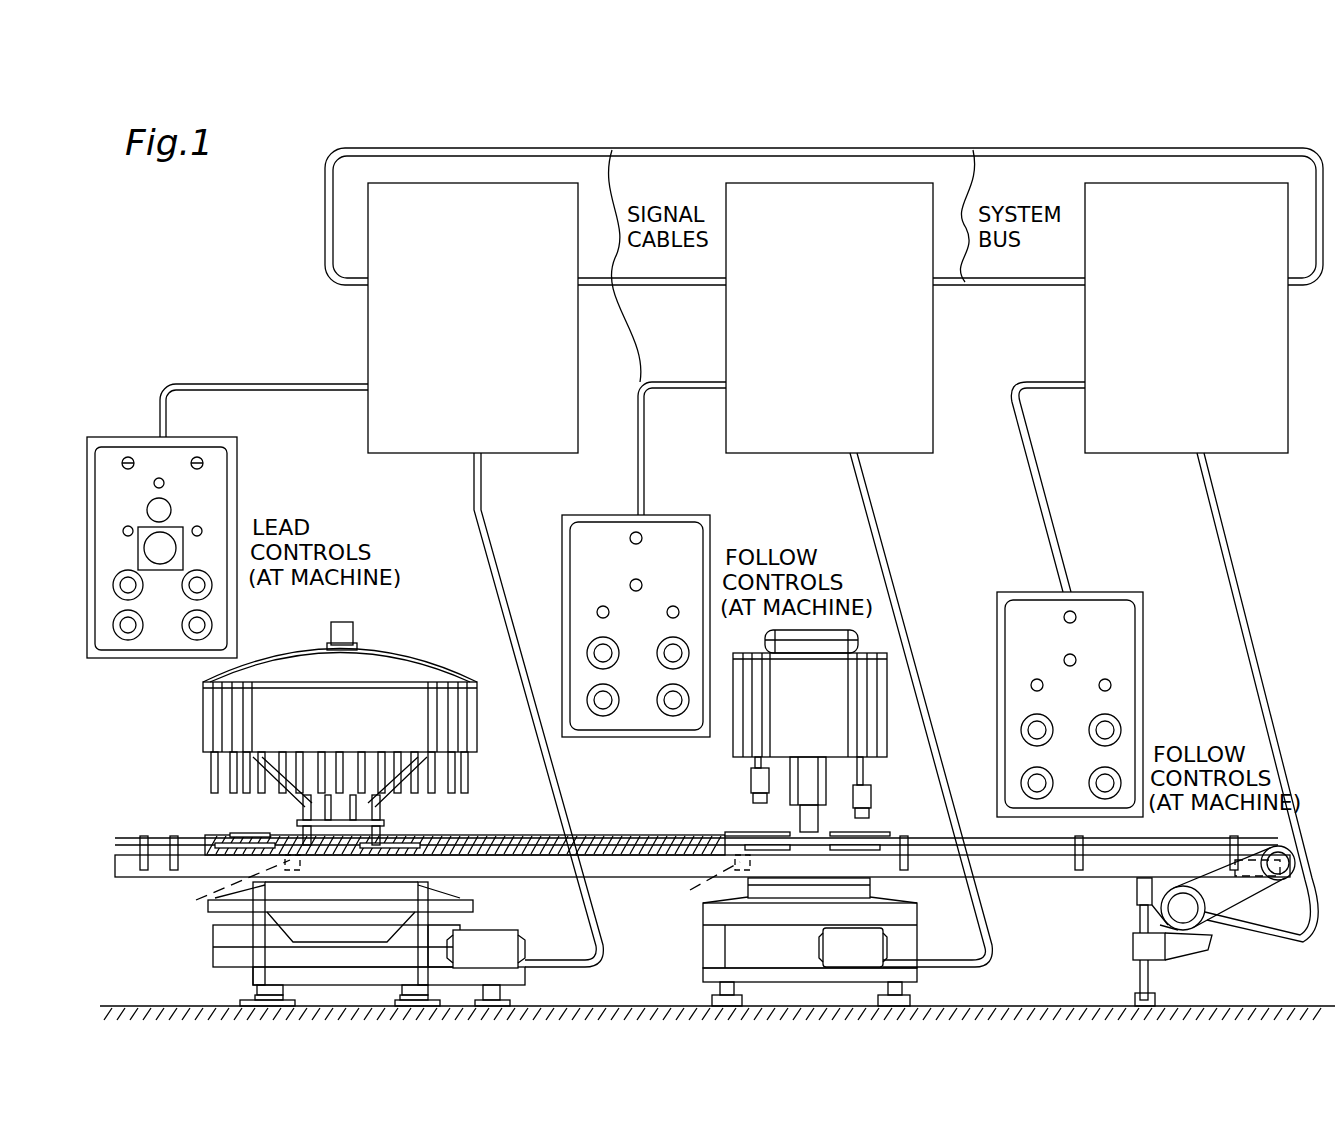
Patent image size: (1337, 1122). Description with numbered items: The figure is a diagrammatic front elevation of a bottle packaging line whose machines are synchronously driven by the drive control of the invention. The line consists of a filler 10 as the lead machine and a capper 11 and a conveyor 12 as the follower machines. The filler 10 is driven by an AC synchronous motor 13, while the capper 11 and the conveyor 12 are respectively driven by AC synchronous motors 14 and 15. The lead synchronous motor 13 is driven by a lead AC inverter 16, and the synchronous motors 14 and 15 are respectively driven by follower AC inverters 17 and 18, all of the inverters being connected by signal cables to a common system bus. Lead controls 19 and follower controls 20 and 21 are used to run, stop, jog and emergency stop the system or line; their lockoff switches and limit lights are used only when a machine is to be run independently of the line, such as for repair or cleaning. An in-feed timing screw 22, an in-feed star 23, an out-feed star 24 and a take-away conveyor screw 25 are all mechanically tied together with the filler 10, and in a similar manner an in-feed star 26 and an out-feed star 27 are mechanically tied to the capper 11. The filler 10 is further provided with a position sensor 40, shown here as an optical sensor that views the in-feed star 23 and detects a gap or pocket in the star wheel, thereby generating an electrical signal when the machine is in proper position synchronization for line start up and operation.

The filler 10 is at (340, 733).
The capper 11 is at (810, 731).
The conveyor 12 is at (1155, 848).
The AC synchronous motor 13 is at (493, 930).
The AC synchronous motor 14 is at (885, 935).
The AC synchronous motor 15 is at (1195, 935).
The lead AC inverter 16 is at (473, 318).
The follower AC inverter 17 is at (829, 318).
The follower AC inverter 18 is at (1186, 318).
The lead controls 19 is at (237, 470).
The follower controls 20 is at (711, 520).
The follower controls 21 is at (1143, 592).
The in-feed timing screw 22 is at (238, 842).
The in-feed star 23 is at (270, 842).
The out-feed star 24 is at (390, 840).
The take-away conveyor screw 25 is at (455, 840).
The in-feed star 26 is at (765, 830).
The out-feed star 27 is at (877, 830).
The position sensor 40 is at (457, 882).